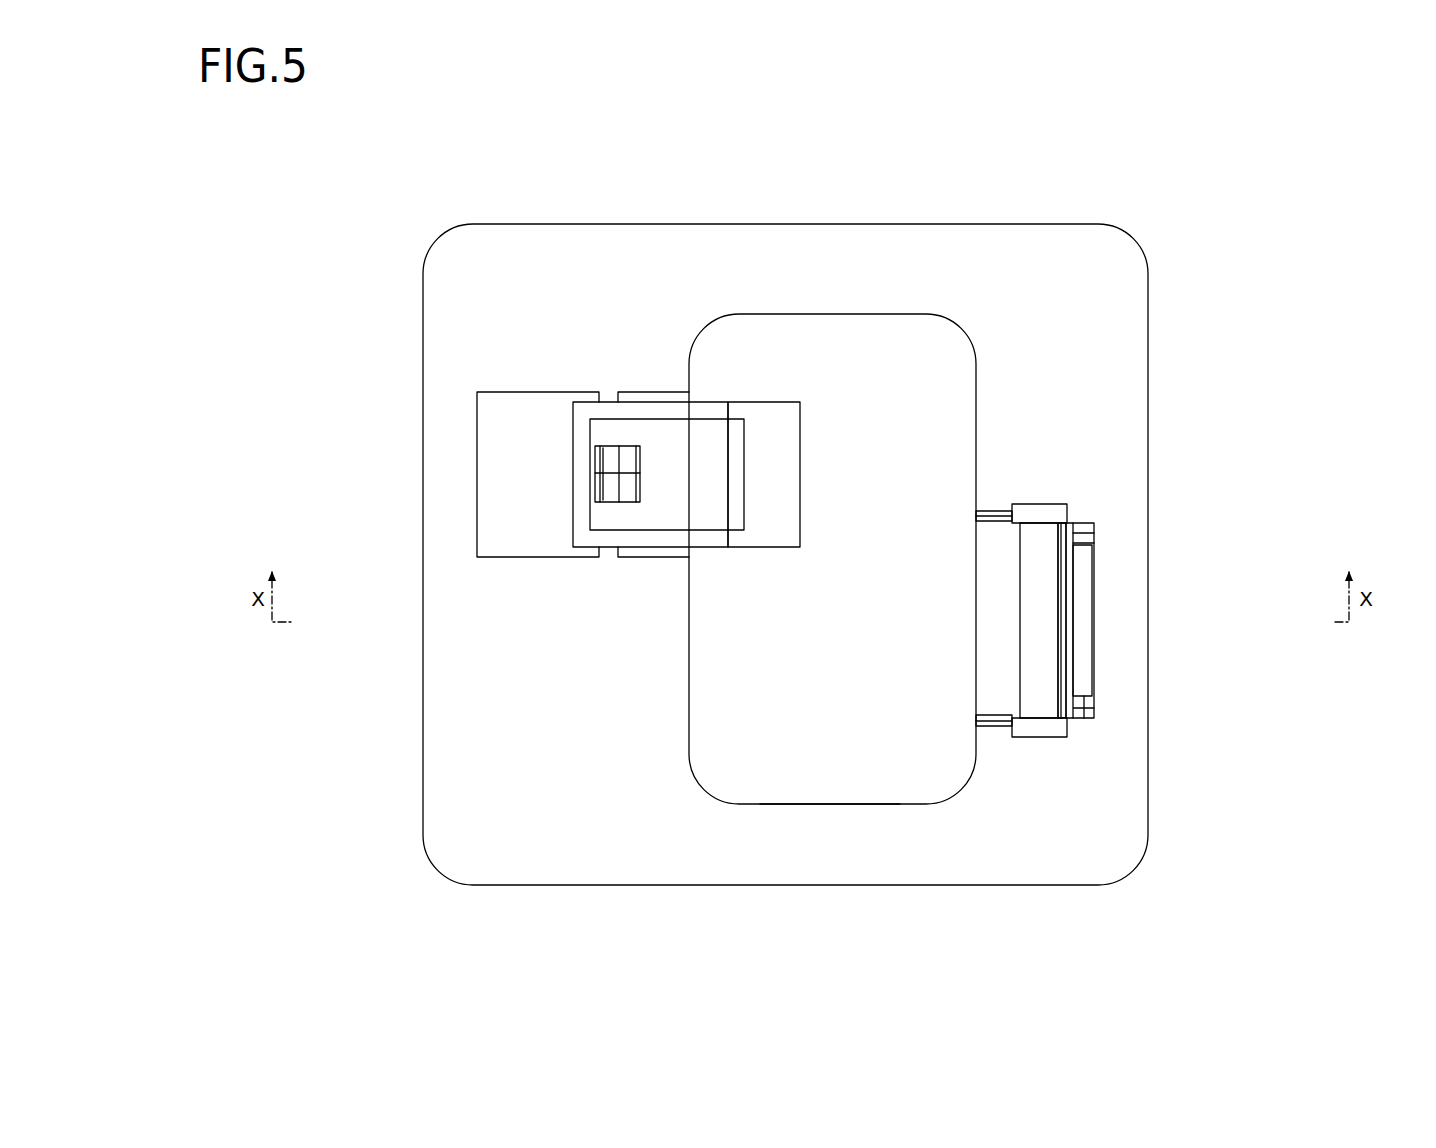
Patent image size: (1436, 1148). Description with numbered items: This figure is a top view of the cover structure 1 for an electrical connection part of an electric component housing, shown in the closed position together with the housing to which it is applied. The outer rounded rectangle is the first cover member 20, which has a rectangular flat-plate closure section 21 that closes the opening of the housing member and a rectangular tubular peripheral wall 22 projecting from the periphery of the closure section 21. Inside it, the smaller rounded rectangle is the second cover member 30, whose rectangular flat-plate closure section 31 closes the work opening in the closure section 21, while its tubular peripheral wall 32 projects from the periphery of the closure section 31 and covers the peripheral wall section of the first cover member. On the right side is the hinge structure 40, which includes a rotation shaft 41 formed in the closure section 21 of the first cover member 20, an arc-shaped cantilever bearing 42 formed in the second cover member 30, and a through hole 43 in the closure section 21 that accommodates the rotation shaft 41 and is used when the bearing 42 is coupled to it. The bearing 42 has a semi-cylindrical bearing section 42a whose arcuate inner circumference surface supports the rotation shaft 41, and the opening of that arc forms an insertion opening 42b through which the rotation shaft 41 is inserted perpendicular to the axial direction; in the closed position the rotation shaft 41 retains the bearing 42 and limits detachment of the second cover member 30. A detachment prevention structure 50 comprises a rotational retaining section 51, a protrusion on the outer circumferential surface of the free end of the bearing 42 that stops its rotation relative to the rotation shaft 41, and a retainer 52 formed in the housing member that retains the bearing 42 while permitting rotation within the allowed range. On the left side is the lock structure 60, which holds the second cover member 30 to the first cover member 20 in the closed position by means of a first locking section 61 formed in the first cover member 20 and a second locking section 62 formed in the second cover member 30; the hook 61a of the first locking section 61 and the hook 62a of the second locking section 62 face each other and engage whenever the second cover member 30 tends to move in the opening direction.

The cover structure 1 is at (744, 100).
The first cover member 20 is at (388, 512).
The closure section 21 is at (448, 608).
The peripheral wall 22 is at (416, 650).
The second cover member 30 is at (814, 262).
The closure section 31 is at (779, 720).
The peripheral wall 32 is at (833, 813).
The hinge structure 40 is at (1110, 429).
The rotation shaft 41 is at (1018, 588).
The bearing 42 is at (1110, 673).
The bearing section 42a is at (1093, 540).
The insertion opening 42b is at (1037, 550).
The through hole 43 is at (1083, 698).
The detachment prevention structure 50 is at (1137, 403).
The rotational retaining section 51 is at (1085, 598).
The retainer 52 is at (989, 513).
The lock structure 60 is at (648, 325).
The first locking section 61 is at (686, 325).
The hook 61a is at (640, 453).
The second locking section 62 is at (620, 319).
The hook 62a is at (595, 474).